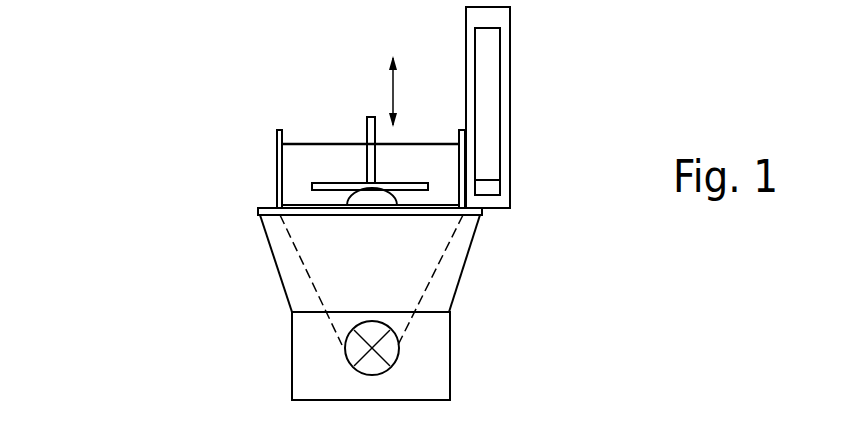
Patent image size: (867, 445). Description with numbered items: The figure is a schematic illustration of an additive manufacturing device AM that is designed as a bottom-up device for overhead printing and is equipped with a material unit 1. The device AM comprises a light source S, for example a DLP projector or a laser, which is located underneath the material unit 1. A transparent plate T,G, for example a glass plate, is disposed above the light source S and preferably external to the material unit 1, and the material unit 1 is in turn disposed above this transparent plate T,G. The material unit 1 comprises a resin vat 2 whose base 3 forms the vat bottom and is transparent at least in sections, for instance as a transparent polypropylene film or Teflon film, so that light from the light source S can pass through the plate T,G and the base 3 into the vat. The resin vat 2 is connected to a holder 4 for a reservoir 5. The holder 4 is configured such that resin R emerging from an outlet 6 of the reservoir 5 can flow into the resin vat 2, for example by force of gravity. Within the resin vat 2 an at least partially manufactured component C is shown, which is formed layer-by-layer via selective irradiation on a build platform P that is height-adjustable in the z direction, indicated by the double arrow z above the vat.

The material unit 1 is at (232, 102).
The additive manufacturing device AM is at (158, 158).
The resin vat 2 is at (280, 170).
The base 3 is at (308, 205).
The holder 4 is at (482, 14).
The reservoir 5 is at (485, 75).
The outlet 6 is at (492, 188).
The resin R is at (317, 150).
The build platform P is at (428, 185).
The component C is at (372, 200).
The z-direction z is at (401, 91).
The transparent plate, glass plate T,G is at (410, 212).
The light source S is at (360, 350).